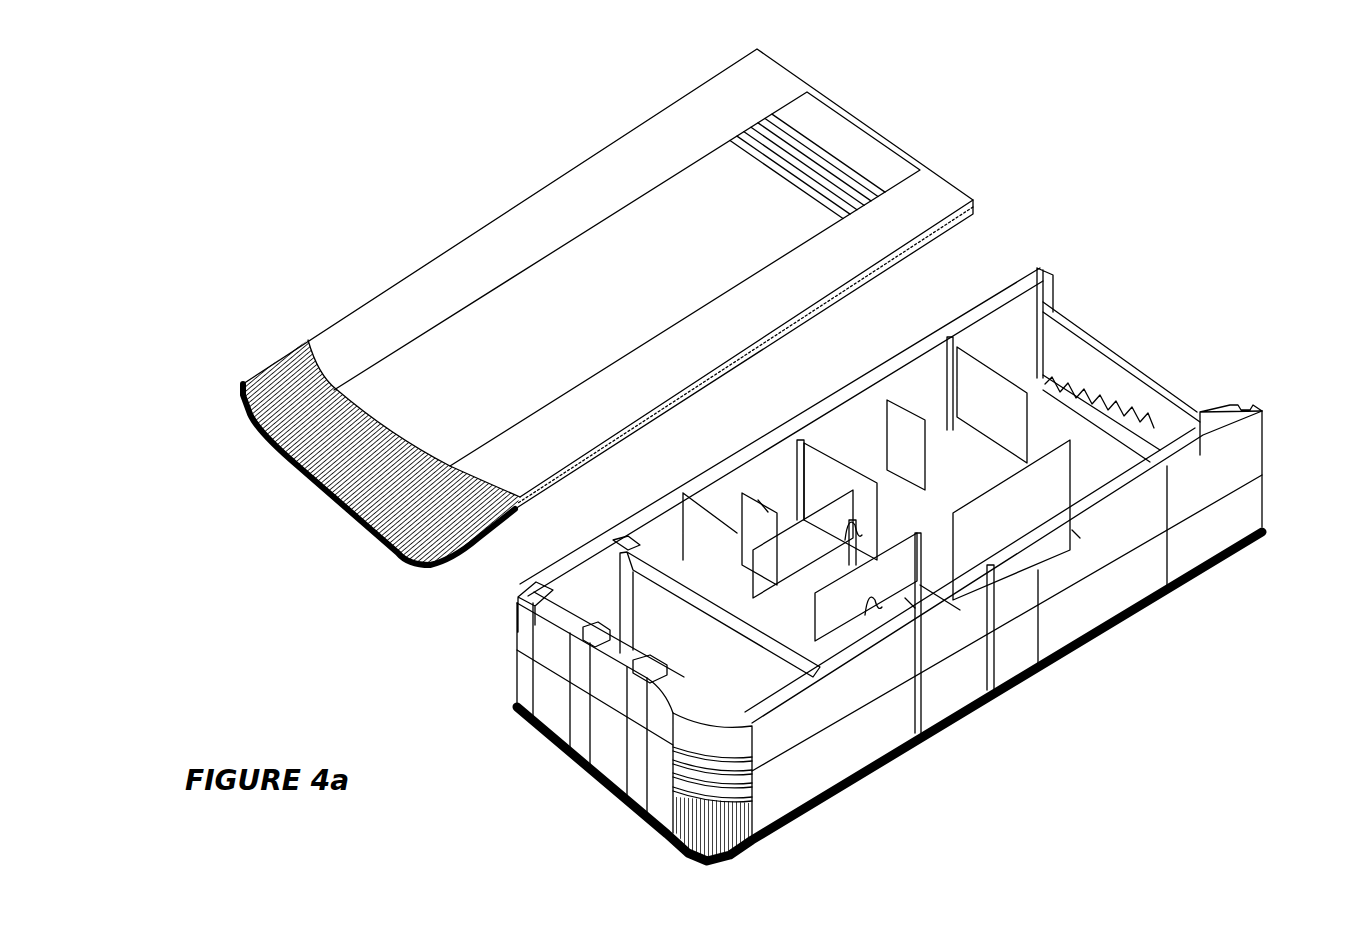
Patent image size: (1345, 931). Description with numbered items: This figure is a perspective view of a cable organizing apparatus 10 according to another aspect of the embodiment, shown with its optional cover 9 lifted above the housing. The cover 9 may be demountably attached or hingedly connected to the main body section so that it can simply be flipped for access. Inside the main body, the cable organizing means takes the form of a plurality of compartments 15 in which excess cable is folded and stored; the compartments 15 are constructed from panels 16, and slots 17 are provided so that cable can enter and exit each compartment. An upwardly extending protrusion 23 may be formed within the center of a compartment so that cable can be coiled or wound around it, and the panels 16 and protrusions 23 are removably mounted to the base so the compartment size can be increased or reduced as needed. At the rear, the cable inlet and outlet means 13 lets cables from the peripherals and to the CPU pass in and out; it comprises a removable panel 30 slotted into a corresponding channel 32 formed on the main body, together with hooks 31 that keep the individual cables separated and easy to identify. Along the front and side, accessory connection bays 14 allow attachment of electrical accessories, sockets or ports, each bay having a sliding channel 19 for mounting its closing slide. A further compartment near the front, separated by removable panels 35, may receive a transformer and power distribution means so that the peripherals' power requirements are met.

The cover 9 is at (635, 163).
The container assembly 10 is at (1100, 150).
The cable inlet and outlet means 13 is at (892, 516).
The accessory connection bay 14 is at (1007, 707).
The compartment 15 is at (940, 390).
The panels 16 is at (847, 455).
The slots 17 is at (730, 560).
The sliding channel 19 is at (523, 600).
The upwardly extending protrusion 23 is at (750, 490).
The removable panel 30 is at (1190, 393).
The hooks 31 is at (1205, 427).
The channel 32 is at (1050, 280).
The removable panels 35 is at (650, 570).